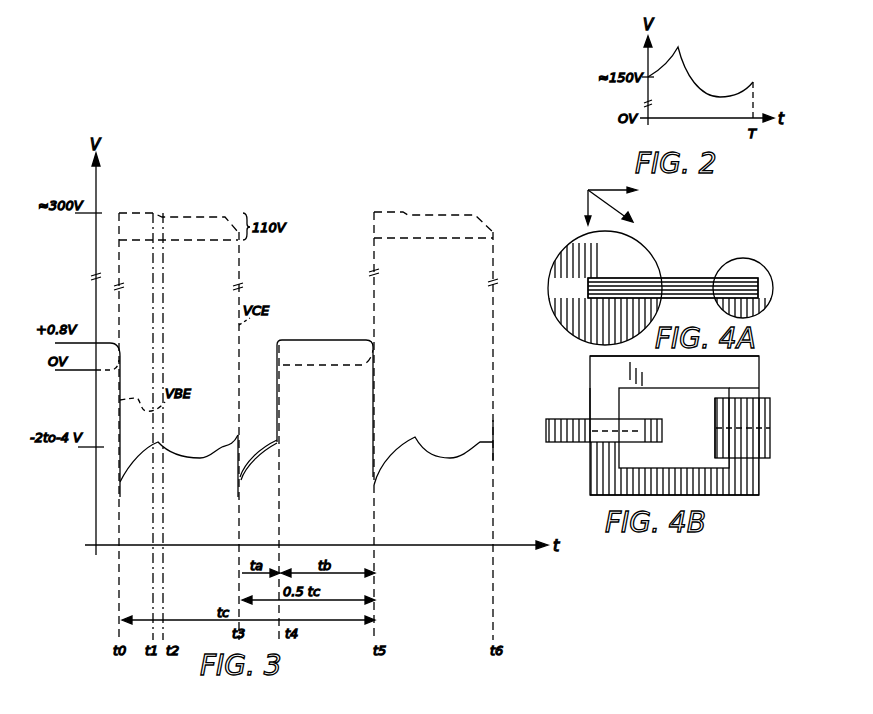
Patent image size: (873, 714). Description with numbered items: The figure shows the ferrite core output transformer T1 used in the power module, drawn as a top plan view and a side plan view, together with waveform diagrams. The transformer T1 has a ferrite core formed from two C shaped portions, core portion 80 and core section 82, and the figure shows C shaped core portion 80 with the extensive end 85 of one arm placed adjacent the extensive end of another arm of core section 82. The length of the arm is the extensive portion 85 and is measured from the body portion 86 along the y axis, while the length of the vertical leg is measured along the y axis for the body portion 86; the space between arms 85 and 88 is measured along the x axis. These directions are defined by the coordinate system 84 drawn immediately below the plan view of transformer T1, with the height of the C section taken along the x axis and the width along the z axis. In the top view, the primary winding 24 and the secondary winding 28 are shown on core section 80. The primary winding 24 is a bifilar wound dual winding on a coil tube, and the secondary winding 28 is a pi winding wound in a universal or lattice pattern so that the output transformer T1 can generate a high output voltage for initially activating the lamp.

In FIG. 4A, the primary winding 24 is at (765, 262).
In FIG. 4B, the primary winding 24 is at (770, 446).
In FIG. 4A, the secondary winding 28 is at (548, 285).
In FIG. 4B, the secondary winding 28 is at (546, 449).
In FIG. 4A, the C shaped core portion 80 is at (700, 299).
In FIG. 4B, the C shaped core portion 80 is at (764, 372).
In FIG. 4B, the core section 82 is at (762, 470).
In FIG. 4A, the coordinate system 84 is at (586, 198).
In FIG. 4B, the extensive end of arm 85 is at (771, 429).
In FIG. 4B, the body portion 86 is at (598, 356).
In FIG. 4B, the arm 88 is at (590, 412).
In FIG. 4A, the output transformer T1 is at (688, 272).
In FIG. 4B, the output transformer T1 is at (768, 391).